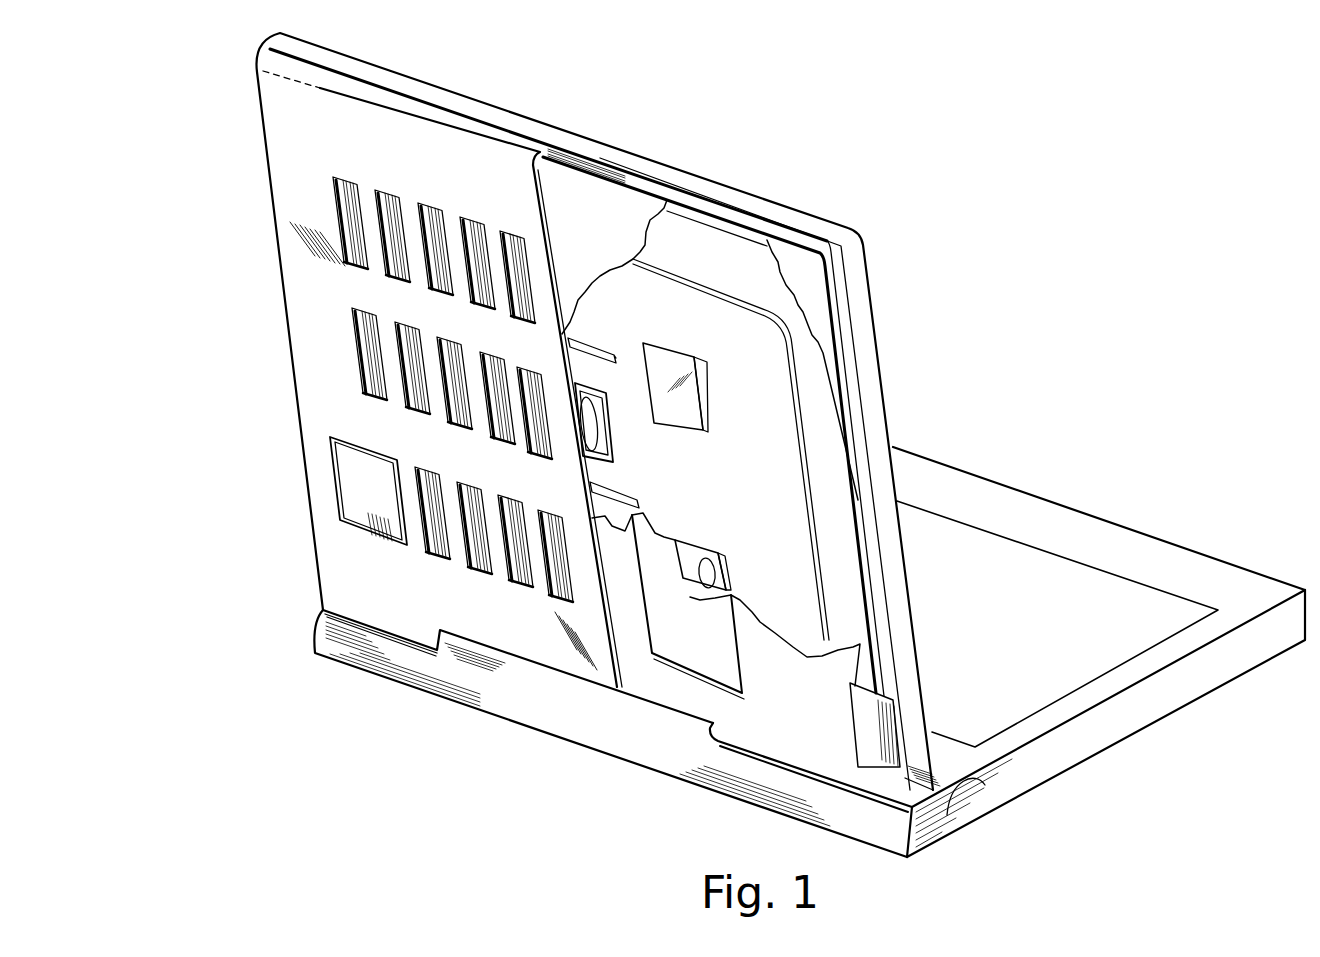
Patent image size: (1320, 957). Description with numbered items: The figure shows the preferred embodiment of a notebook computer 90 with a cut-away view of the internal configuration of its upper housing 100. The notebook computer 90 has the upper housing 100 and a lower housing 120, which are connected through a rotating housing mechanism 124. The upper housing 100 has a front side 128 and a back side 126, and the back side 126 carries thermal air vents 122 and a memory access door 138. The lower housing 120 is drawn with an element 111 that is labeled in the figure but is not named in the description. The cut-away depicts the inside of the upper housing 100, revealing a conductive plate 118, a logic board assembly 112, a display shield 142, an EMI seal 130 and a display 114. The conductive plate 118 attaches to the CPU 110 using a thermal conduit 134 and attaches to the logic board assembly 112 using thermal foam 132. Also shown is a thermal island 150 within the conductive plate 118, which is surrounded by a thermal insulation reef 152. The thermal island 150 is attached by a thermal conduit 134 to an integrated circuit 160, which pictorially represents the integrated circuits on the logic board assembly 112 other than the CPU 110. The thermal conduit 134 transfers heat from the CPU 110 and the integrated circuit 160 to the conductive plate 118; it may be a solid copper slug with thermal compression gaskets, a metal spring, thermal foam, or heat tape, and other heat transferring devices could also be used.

The notebook computer 90 is at (1076, 486).
The upper housing 100 is at (497, 113).
The CPU 110 is at (608, 437).
The base recess 111 is at (1092, 596).
The logic board assembly 112 is at (760, 338).
The display 114 is at (810, 289).
The conductive plate 118 is at (713, 744).
The lower housing 120 is at (1190, 566).
The thermal air vents 122 is at (417, 393).
The rotating housing mechanism 124 is at (370, 648).
The back side 126 is at (332, 358).
The front side 128 is at (562, 122).
The EMI seal 130 is at (611, 197).
The thermal foam 132 is at (598, 352).
The thermal conduit 134 is at (590, 450).
The memory access door 138 is at (357, 486).
The display shield 142 is at (820, 428).
The thermal island 150 is at (675, 637).
The thermal insulation reef 152 is at (780, 680).
The integrated circuit 160 is at (706, 402).